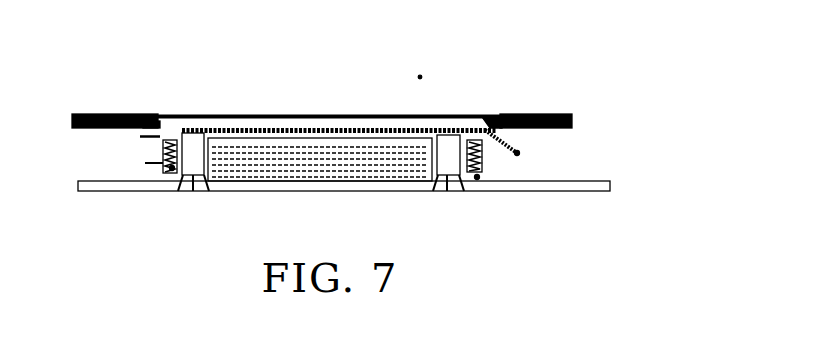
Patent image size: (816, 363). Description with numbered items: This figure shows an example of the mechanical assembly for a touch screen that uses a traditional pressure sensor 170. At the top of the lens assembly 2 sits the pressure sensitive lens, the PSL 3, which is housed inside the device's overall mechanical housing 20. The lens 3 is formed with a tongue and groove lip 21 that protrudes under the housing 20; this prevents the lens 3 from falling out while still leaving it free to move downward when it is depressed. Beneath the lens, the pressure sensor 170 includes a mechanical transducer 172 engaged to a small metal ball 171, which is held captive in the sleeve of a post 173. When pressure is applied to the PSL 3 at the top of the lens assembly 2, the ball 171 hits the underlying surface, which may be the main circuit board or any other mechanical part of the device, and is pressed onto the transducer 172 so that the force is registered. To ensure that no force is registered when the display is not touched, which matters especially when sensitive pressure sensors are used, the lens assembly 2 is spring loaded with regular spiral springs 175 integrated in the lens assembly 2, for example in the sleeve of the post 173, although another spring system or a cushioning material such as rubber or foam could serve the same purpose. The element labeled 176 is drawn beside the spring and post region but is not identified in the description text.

The lens assembly 2 is at (420, 77).
The PSL lens 3 is at (240, 115).
The mechanical housing 20 is at (110, 115).
The tongue and groove lip 21 is at (157, 115).
The pressure sensor 170 is at (178, 191).
The metal ball 171 is at (193, 191).
The mechanical transducer 172 is at (209, 191).
The post 173 is at (163, 152).
The spiral springs 175 is at (172, 168).
The arm 176 is at (145, 163).